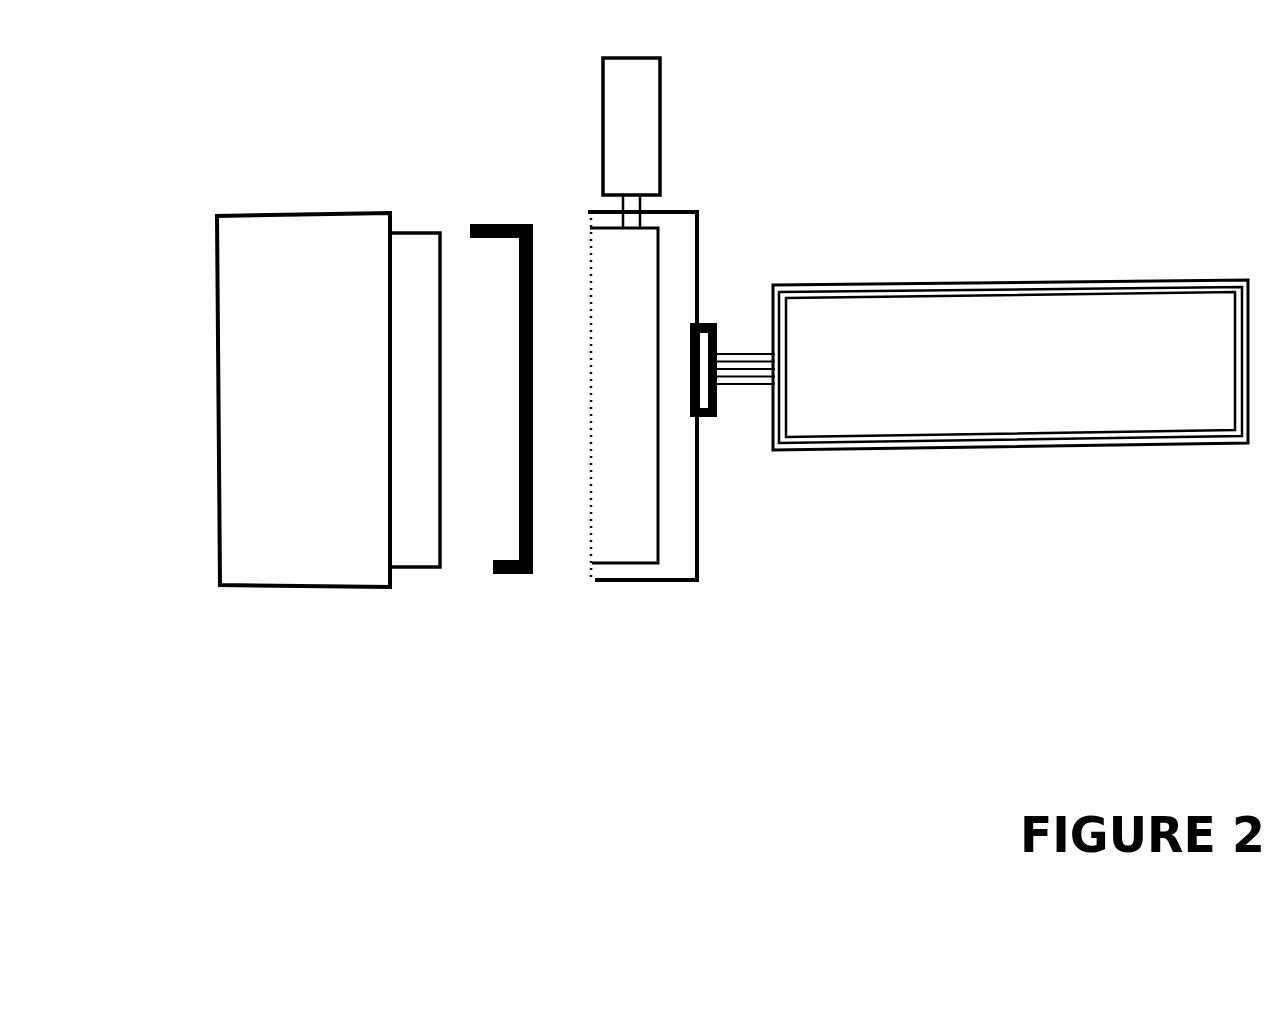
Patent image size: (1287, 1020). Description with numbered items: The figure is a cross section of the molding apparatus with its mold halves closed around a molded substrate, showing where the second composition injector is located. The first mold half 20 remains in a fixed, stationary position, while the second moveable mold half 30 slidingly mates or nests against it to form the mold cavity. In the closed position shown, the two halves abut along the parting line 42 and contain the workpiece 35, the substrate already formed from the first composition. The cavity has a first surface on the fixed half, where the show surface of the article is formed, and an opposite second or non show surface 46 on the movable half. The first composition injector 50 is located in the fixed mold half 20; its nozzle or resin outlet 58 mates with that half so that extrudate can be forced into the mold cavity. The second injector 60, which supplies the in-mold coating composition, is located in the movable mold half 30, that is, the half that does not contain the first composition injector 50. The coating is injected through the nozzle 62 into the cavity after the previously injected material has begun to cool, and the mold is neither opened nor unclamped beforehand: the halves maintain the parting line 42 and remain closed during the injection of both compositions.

The first mold half 20 is at (667, 598).
The second moveable mold half 30 is at (292, 603).
The workpiece 35 is at (545, 600).
The parting line 42 is at (428, 602).
The second or non show surface 46 is at (590, 263).
The first composition injector 50 is at (1033, 268).
The nozzle or resin outlet 58 is at (727, 327).
The second injector 60 is at (675, 108).
The nozzle 62 is at (675, 193).